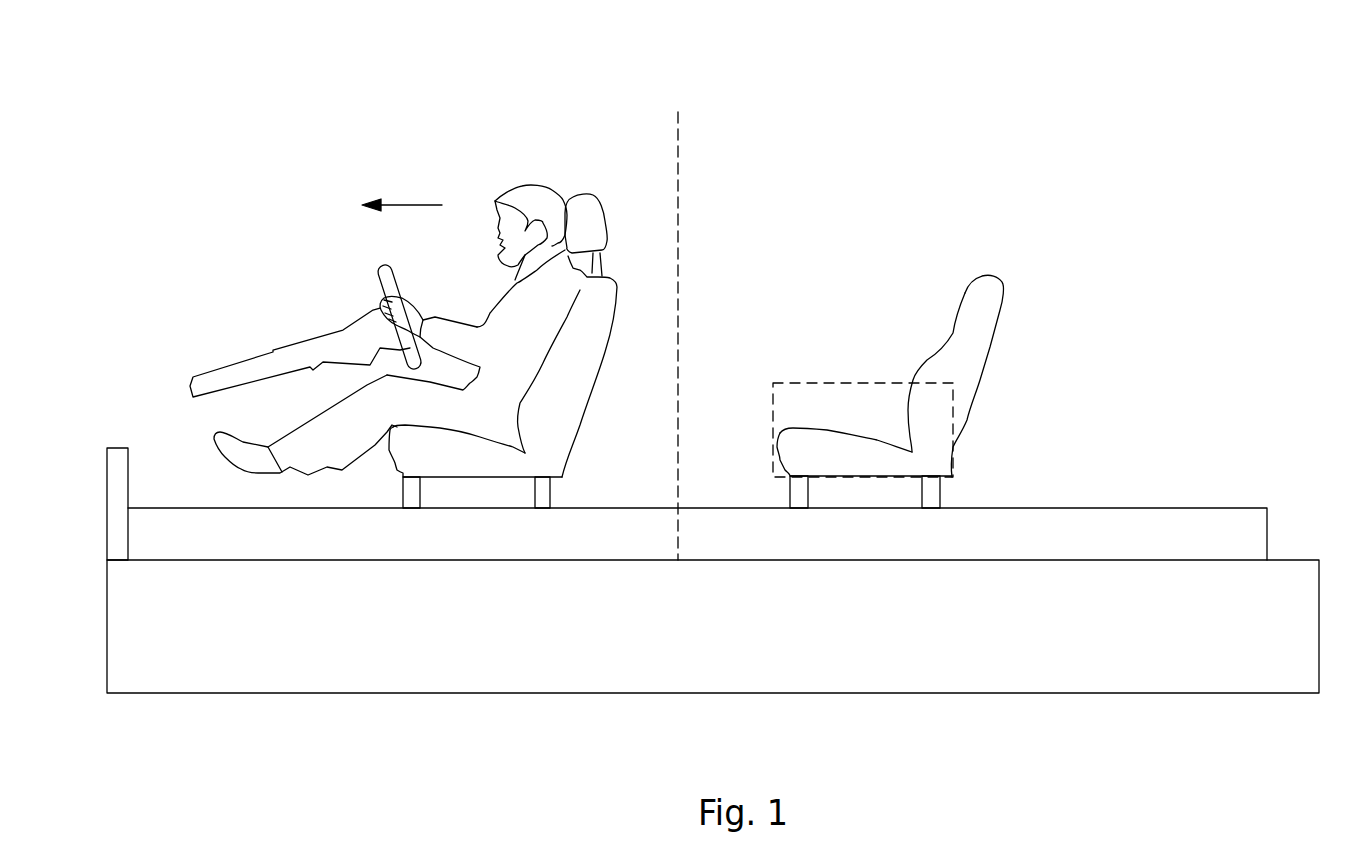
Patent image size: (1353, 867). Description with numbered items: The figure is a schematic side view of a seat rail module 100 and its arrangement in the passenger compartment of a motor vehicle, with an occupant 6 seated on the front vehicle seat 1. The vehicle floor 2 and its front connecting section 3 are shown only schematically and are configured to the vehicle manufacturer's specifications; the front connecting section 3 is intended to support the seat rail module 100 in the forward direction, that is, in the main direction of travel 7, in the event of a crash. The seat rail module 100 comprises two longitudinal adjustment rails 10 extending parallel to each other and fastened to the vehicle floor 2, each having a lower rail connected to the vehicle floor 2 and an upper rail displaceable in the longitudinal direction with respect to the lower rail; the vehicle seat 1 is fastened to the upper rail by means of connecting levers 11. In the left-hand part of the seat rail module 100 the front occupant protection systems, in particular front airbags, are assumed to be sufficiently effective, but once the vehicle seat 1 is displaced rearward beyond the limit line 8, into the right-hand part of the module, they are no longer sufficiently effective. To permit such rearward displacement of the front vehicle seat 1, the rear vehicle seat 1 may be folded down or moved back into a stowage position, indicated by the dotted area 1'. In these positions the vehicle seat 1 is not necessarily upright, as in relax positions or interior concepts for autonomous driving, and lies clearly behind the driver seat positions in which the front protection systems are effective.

The seat rail module 100 is at (223, 90).
The vehicle seat 1 is at (717, 335).
The stowage position 1' is at (863, 386).
The vehicle floor 2 is at (408, 675).
The front connecting section 3 is at (113, 476).
The occupant / driver 6 is at (531, 199).
The main direction of travel 7 is at (410, 204).
The limit line 8 is at (678, 133).
The longitudinal adjustment rail 10 is at (1141, 525).
The connecting lever 11 is at (540, 493).